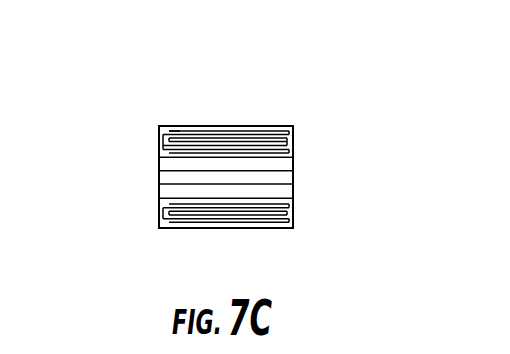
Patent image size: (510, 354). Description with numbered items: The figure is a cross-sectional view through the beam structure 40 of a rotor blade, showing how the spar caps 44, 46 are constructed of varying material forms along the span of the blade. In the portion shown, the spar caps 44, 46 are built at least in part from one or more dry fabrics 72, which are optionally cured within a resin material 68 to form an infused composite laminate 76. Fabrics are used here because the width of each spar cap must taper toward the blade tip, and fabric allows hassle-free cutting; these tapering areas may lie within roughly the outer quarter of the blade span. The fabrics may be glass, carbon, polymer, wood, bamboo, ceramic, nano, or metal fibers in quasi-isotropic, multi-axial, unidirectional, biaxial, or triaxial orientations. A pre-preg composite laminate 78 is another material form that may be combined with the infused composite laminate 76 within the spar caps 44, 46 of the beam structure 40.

The beam structure 40 is at (125, 110).
The spar cap 44 is at (220, 230).
The spar cap 46 is at (265, 127).
The resin material 68 is at (295, 136).
The dry fabric 72 is at (215, 132).
The infused composite laminate 76 is at (294, 130).
The pre-preg composite laminate 78 is at (175, 133).